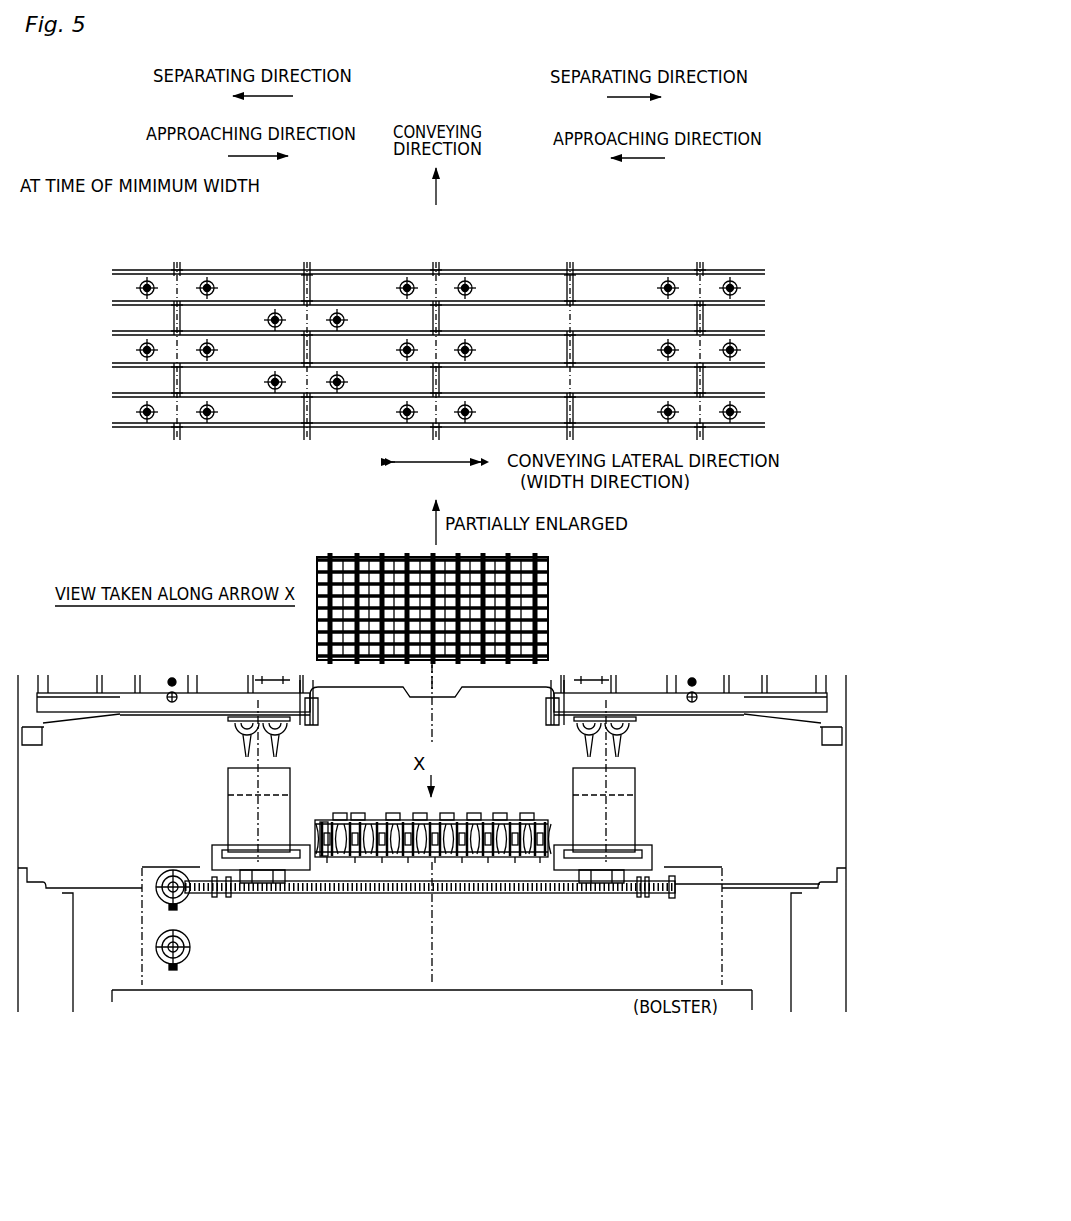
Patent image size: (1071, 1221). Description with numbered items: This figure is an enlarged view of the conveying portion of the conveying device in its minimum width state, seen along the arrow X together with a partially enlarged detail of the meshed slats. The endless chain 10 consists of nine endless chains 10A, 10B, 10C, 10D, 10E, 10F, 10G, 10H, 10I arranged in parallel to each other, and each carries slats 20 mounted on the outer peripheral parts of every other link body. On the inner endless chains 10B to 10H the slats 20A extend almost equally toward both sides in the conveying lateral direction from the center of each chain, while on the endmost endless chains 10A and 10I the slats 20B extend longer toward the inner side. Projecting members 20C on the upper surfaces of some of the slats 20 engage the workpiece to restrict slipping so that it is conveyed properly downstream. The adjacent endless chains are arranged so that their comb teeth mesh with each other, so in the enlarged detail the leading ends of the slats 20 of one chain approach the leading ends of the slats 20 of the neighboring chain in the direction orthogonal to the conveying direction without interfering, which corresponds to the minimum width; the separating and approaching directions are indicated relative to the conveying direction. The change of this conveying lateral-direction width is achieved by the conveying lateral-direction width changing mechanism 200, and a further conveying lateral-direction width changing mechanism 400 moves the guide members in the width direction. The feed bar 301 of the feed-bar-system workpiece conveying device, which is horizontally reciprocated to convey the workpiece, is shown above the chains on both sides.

The endless chain 10 is at (308, 933).
The endless chain 10A is at (330, 864).
The endless chain 10B is at (358, 864).
The endless chain 10C is at (180, 262).
The endless chain 10D is at (312, 266).
The endless chain 10E is at (440, 263).
The endless chain 10F is at (577, 265).
The endless chain 10G is at (706, 265).
The endless chain 10H is at (509, 864).
The endless chain 10I is at (536, 864).
The slat 20 is at (395, 766).
The slat 20A is at (248, 290).
The slat 20B is at (333, 818).
The projecting member 20C is at (448, 810).
The conveying lateral-direction width changing mechanism 200 is at (198, 918).
The feed bar 301 is at (218, 785).
The conveying lateral-direction width changing mechanism 400 is at (163, 975).